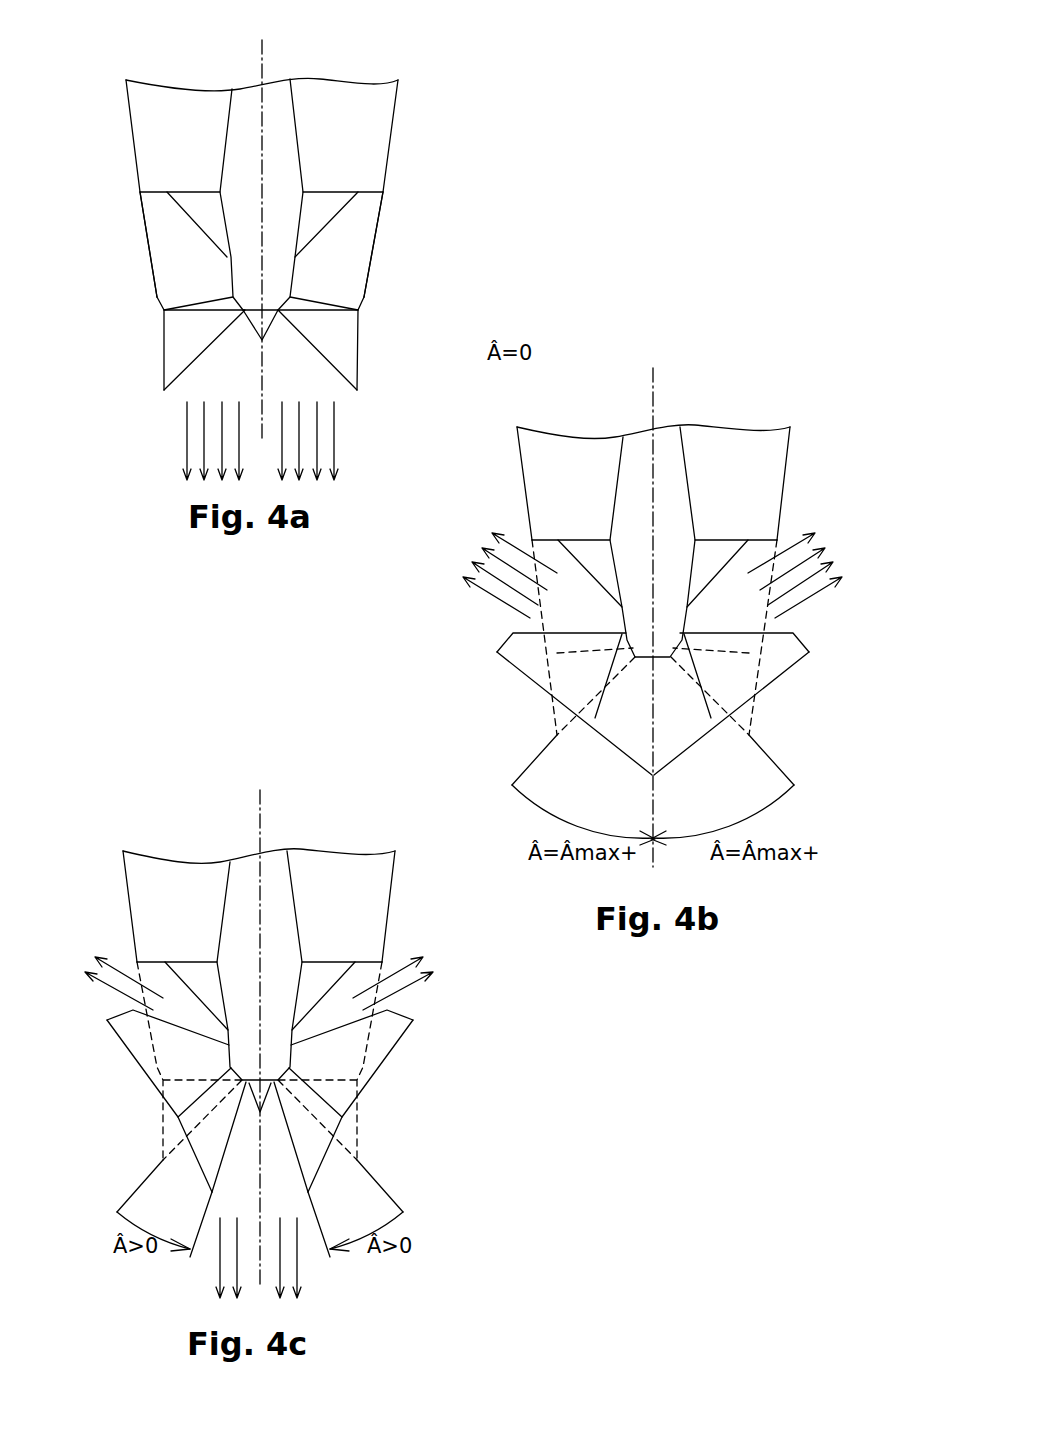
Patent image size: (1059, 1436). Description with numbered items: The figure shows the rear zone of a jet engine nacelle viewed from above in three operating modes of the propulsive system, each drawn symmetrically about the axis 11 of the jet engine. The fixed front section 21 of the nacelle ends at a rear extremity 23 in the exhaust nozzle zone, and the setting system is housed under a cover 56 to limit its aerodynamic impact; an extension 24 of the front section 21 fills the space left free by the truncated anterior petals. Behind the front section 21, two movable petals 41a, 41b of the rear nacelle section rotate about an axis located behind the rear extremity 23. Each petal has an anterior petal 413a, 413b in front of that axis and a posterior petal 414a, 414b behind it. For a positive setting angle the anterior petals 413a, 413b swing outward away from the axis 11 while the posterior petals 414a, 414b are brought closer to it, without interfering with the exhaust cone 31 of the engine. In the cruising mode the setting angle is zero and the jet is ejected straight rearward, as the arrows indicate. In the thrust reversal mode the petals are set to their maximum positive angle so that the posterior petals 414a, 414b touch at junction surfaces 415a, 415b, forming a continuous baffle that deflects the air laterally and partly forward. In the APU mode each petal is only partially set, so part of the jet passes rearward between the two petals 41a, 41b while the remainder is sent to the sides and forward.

In FIG. 4B, the axis of the jet engine 11 is at (653, 395).
In FIG. 4C, the axis of the jet engine 11 is at (260, 818).
In FIG. 4A, the front section of the nacelle 21 is at (373, 115).
In FIG. 4B, the front section of the nacelle 21 is at (770, 455).
In FIG. 4C, the front section of the nacelle 21 is at (375, 877).
In FIG. 4A, the rear extremity 23 is at (155, 192).
In FIG. 4B, the rear extremity 23 is at (543, 540).
In FIG. 4C, the rear extremity 23 is at (148, 962).
In FIG. 4A, the extension 24 is at (330, 213).
In FIG. 4B, the extension 24 is at (722, 547).
In FIG. 4C, the extension 24 is at (328, 972).
In FIG. 4A, the exhaust cone 31 is at (253, 317).
In FIG. 4C, the exhaust cone 31 is at (260, 1097).
In FIG. 4A, the petal 41a is at (378, 288).
In FIG. 4B, the petal 41a is at (773, 696).
In FIG. 4C, the petal 41a is at (374, 1096).
In FIG. 4A, the petal 41b is at (142, 284).
In FIG. 4B, the petal 41b is at (552, 708).
In FIG. 4C, the petal 41b is at (144, 1096).
In FIG. 4A, the cover 56 is at (248, 98).
In FIG. 4B, the cover 56 is at (637, 457).
In FIG. 4C, the cover 56 is at (243, 883).
In FIG. 4A, the anterior petal 413a is at (348, 255).
In FIG. 4B, the anterior petal 413a is at (787, 653).
In FIG. 4C, the anterior petal 413a is at (385, 1047).
In FIG. 4A, the anterior petal 413b is at (173, 245).
In FIG. 4B, the anterior petal 413b is at (523, 660).
In FIG. 4C, the anterior petal 413b is at (142, 1055).
In FIG. 4A, the posterior petal 414a is at (348, 330).
In FIG. 4B, the posterior petal 414a is at (682, 728).
In FIG. 4C, the posterior petal 414a is at (327, 1153).
In FIG. 4A, the posterior petal 414b is at (172, 328).
In FIG. 4B, the posterior petal 414b is at (600, 732).
In FIG. 4C, the posterior petal 414b is at (193, 1153).
In FIG. 4A, the junction surface 415a is at (357, 390).
In FIG. 4A, the junction surface 415b is at (164, 390).